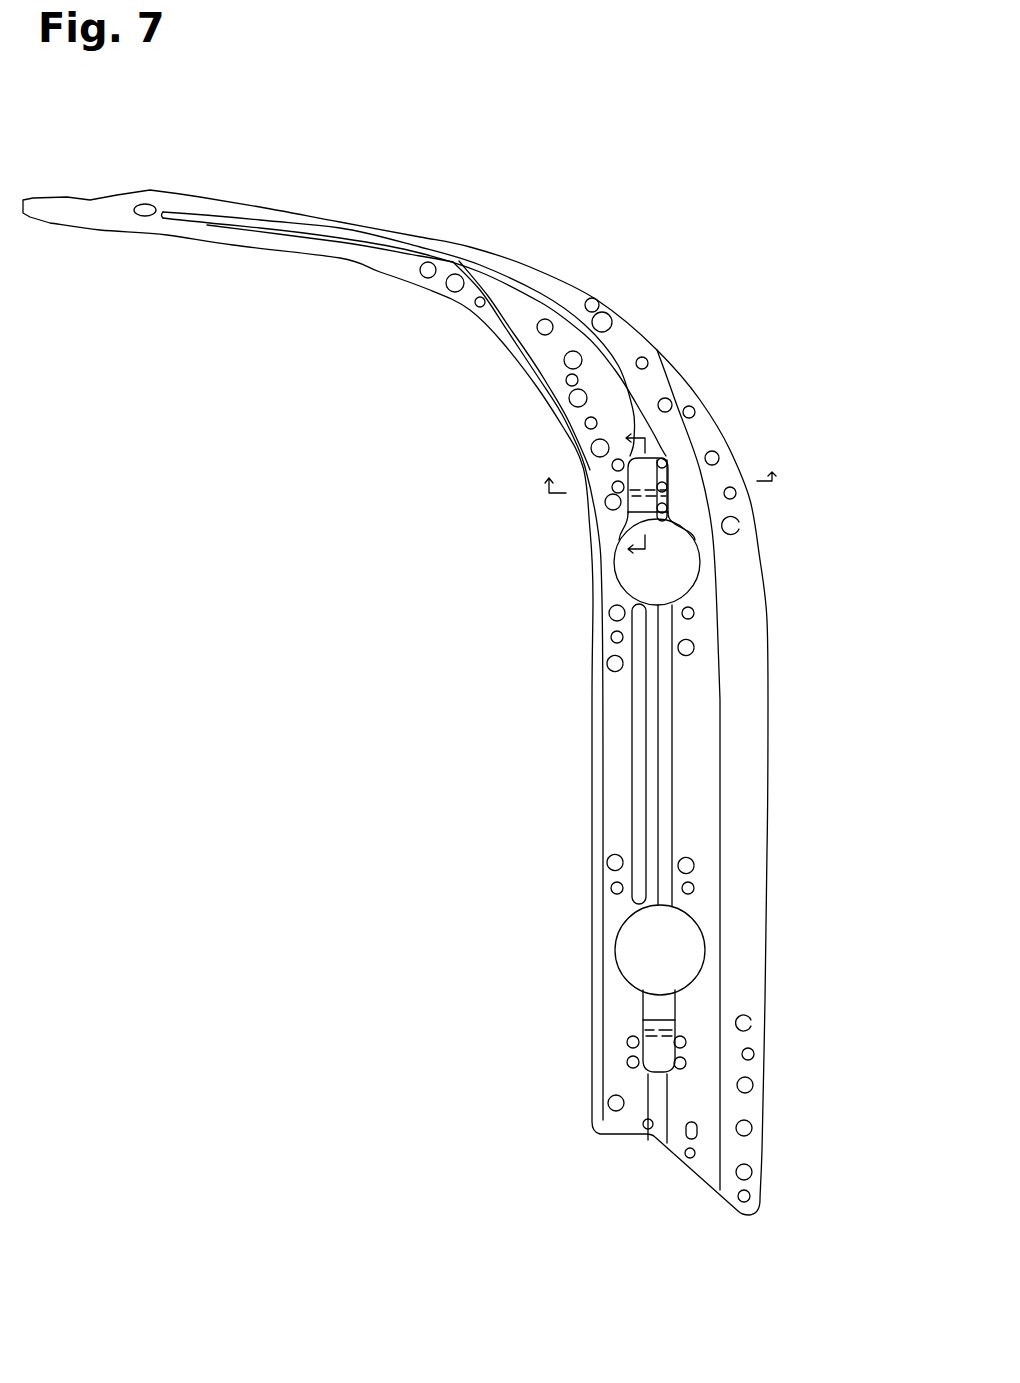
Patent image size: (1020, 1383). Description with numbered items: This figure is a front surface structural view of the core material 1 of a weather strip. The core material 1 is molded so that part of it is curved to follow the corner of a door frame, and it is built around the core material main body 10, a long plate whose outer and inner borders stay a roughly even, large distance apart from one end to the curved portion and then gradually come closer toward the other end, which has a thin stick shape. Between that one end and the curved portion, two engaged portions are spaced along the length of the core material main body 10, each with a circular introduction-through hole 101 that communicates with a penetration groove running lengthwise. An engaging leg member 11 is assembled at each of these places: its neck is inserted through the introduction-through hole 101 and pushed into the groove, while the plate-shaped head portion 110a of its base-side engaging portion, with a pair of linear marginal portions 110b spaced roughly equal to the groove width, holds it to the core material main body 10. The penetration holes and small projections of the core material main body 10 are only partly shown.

The core material 1 is at (608, 273).
The core material main body 10 is at (748, 683).
The engaging leg member 11 is at (643, 480).
The introduction-through hole 101 is at (630, 567).
The head portion 110a is at (688, 545).
The linear marginal portions 110b is at (670, 503).